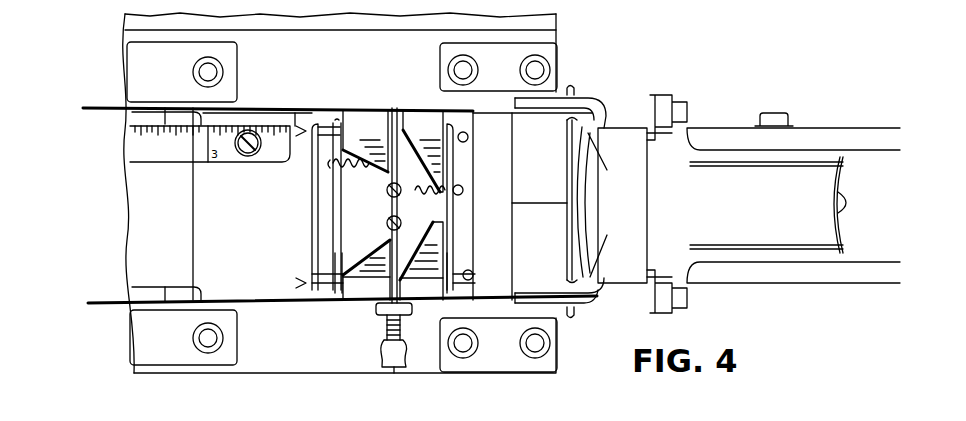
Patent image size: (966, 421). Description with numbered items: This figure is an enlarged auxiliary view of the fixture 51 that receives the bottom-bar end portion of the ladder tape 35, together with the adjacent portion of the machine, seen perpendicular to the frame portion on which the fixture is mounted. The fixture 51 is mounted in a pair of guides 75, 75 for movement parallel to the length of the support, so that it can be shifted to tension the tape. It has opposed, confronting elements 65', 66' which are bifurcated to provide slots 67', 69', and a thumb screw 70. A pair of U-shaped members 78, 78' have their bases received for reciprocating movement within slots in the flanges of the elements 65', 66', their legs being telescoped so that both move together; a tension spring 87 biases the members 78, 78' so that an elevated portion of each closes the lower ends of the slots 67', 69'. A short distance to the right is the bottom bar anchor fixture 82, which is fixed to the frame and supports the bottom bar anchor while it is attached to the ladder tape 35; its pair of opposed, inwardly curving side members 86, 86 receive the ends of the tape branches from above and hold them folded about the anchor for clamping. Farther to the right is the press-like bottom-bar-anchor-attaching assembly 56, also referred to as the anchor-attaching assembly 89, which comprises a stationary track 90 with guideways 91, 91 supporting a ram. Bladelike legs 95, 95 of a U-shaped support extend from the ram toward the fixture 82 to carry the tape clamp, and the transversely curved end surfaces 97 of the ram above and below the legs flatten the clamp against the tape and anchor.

The ladder tape 35 is at (115, 307).
The fixture 51 is at (307, 233).
The bottom-bar-anchor-attaching assembly 56 is at (890, 124).
The confronting element 65' is at (358, 115).
The confronting element 66' is at (349, 302).
The slot 67' is at (423, 125).
The slot 69' is at (421, 288).
The thumb screw 70 is at (398, 378).
The guide 75 is at (137, 116).
The U-shaped member 78 is at (292, 204).
The U-shaped member 78' is at (293, 270).
The bottom bar anchor fixture 82 is at (583, 91).
The side member 86 is at (588, 104).
The tension spring 87 is at (340, 180).
The anchor-attaching assembly 89 is at (866, 117).
The stationary track 90 is at (708, 183).
The guideway 91 is at (823, 133).
The bladelike leg 95 is at (745, 167).
The transversely curved end surface 97 is at (836, 225).